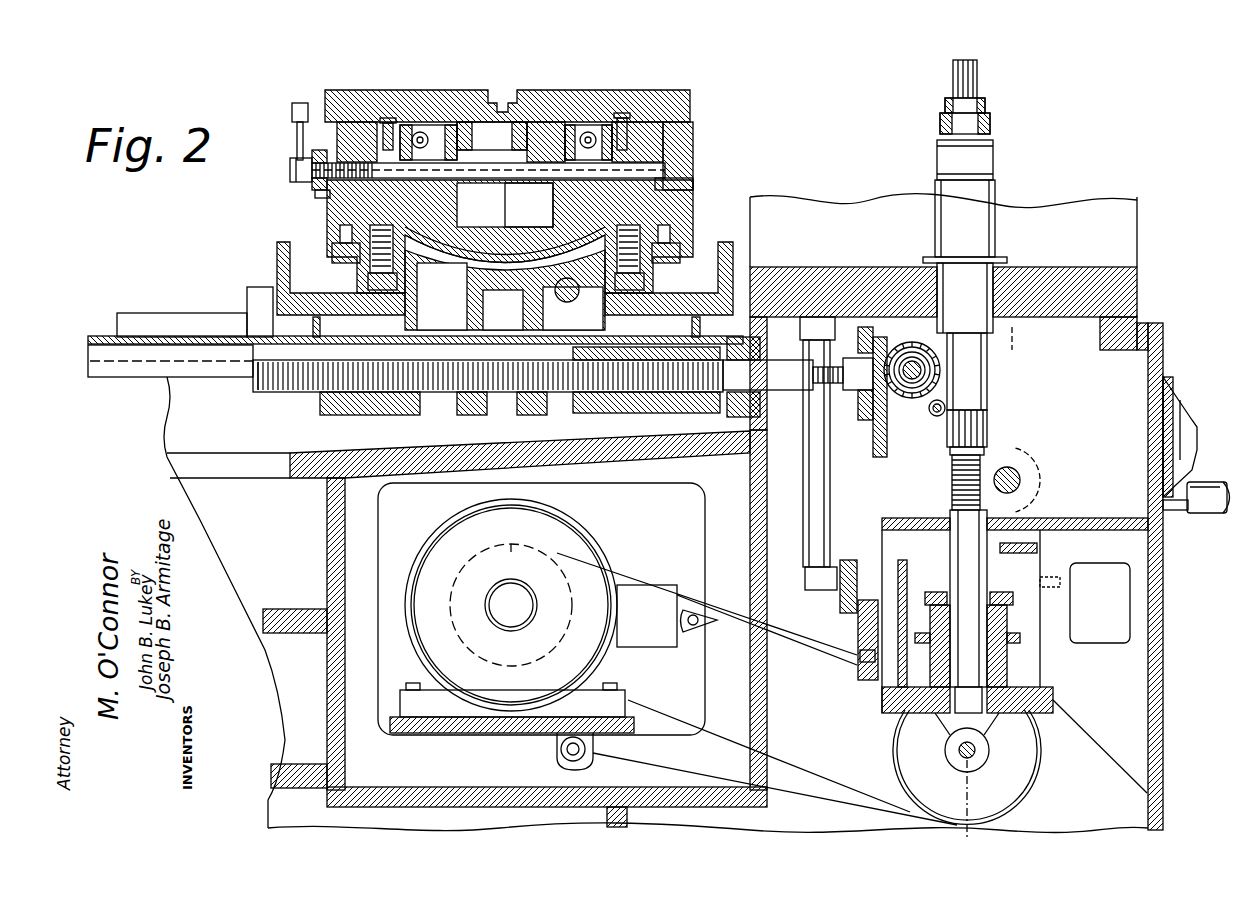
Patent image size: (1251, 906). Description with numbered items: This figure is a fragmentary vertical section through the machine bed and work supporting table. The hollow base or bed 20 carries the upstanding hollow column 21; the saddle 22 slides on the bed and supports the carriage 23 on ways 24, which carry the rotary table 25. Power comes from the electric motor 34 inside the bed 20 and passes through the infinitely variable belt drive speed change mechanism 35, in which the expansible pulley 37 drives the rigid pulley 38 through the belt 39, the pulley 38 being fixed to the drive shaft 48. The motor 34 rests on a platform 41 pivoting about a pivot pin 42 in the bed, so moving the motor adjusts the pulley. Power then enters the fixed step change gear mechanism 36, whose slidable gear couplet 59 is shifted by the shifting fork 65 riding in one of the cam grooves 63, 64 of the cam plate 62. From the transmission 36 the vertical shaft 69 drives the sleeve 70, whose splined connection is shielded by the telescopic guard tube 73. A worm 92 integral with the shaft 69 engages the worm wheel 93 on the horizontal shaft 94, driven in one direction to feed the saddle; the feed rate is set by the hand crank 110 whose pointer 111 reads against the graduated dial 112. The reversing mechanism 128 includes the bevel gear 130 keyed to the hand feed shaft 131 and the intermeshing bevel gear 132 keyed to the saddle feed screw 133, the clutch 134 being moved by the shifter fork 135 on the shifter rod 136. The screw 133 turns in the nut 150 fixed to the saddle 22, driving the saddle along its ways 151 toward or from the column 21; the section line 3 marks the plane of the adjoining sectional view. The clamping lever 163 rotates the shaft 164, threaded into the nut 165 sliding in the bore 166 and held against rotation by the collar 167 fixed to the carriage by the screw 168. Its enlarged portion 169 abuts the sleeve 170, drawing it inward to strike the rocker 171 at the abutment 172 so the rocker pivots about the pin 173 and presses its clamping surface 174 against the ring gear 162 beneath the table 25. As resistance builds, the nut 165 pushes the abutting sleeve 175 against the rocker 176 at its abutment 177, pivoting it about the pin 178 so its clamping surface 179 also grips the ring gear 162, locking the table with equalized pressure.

The section line 3- 3 is at (1018, 340).
The hollow base or bed 20 is at (167, 485).
The hollow column 21 is at (1115, 243).
The saddle 22 is at (277, 250).
The carriage 23 is at (688, 212).
The ways 24 is at (390, 207).
The rotary table 25 is at (325, 96).
The electric motor 34 is at (442, 545).
The infinitely variable belt drive speed change mechanism 35 is at (640, 555).
The fixed step change gear mechanism 36 is at (1027, 665).
The expansible pulley 37 is at (512, 545).
The rigid pulley 38 is at (1035, 757).
The belt 39 is at (815, 778).
The platform 41 is at (455, 735).
The pivot pin 42 is at (586, 754).
The drive shaft 48 is at (958, 750).
The slidable gear couplet 59 is at (1037, 549).
The cam plate 62 is at (860, 672).
The cam groove 63 is at (858, 657).
The cam groove 64 is at (896, 660).
The shifting fork 65 is at (840, 585).
The vertical shaft 69 is at (985, 452).
The sleeve 70 is at (988, 437).
The telescopic guard tube 73 is at (980, 158).
The worm 92 is at (952, 483).
The worm wheel 93 is at (1020, 468).
The horizontal shaft 94 is at (1020, 484).
The hand crank 110 is at (1210, 512).
The pointer 111 is at (1192, 422).
The graduated dial 112 is at (1168, 392).
The reversing mechanism 128 is at (882, 447).
The bevel gear 130 is at (905, 400).
The hand feed shaft 131 is at (918, 344).
The bevel gear 132 is at (864, 412).
The saddle feed screw 133 is at (262, 394).
The clutch 134 is at (948, 337).
The shifter fork 135 is at (953, 402).
The shifter rod 136 is at (946, 410).
The nut 150 is at (636, 413).
The ways 151 is at (192, 330).
The ring gear 162 is at (665, 130).
The clamping lever 163 is at (290, 170).
The shaft 164 is at (312, 156).
The nut 165 is at (312, 184).
The bore 166 is at (352, 122).
The collar 167 is at (297, 138).
The screw 168 is at (320, 197).
The enlarged portion 169 is at (693, 160).
The sleeve 170 is at (693, 180).
The rocker 171 is at (560, 122).
The abutment 172 is at (542, 200).
The pin 173 is at (595, 128).
The clamping surface 174 is at (624, 118).
The abutting sleeve 175 is at (388, 118).
The rocker 176 is at (422, 130).
The abutment 177 is at (470, 192).
The pin 178 is at (492, 136).
The clamping surface 179 is at (488, 170).